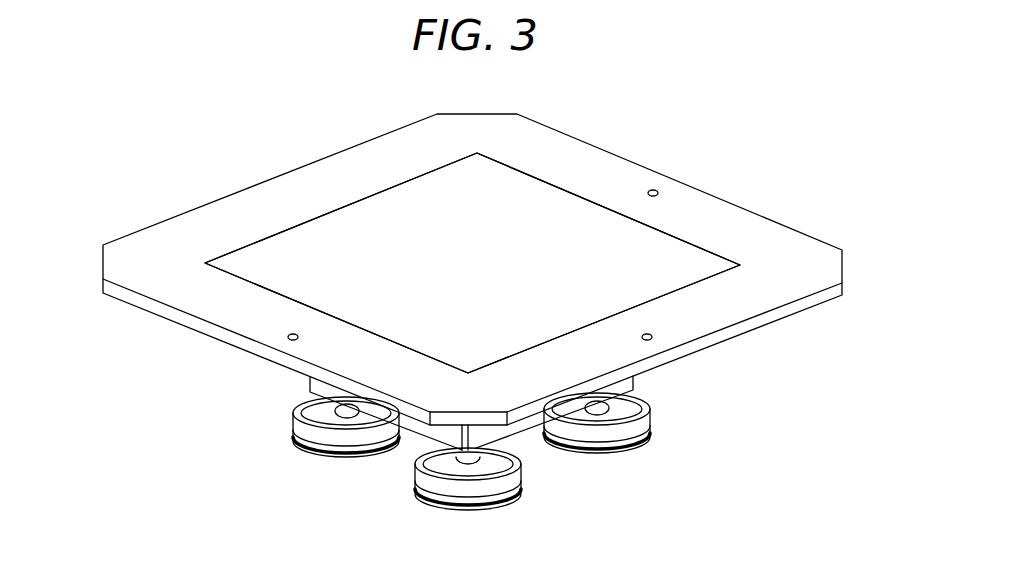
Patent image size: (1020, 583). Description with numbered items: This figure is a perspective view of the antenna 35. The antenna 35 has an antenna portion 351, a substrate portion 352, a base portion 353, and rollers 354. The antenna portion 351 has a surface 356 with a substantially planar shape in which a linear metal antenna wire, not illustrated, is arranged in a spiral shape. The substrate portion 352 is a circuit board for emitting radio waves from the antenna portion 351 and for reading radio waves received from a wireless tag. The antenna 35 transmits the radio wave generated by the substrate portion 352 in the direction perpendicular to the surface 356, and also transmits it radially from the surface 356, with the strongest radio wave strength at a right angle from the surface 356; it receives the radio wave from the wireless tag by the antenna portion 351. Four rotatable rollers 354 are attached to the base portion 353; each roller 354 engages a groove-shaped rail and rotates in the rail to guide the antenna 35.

The antenna 35 is at (277, 200).
The antenna portion 351 is at (440, 215).
The substrate portion 352 is at (745, 300).
The base portion 353 is at (523, 427).
The roller 354 is at (332, 433).
The surface 356 is at (542, 215).